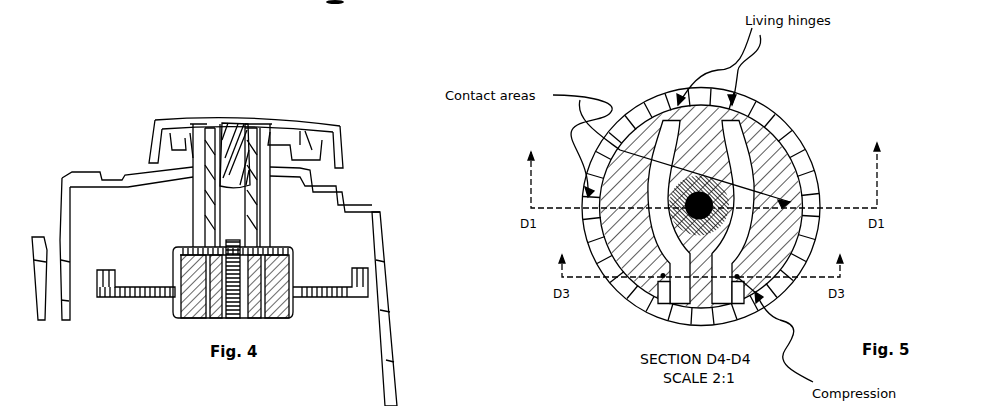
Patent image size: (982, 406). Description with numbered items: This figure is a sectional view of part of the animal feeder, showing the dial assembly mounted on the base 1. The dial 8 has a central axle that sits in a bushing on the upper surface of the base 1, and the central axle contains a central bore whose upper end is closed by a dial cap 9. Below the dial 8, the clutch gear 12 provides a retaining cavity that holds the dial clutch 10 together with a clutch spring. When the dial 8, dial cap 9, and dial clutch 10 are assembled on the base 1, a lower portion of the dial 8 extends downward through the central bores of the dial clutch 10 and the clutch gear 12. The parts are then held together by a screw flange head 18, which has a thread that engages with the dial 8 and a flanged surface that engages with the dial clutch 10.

The base 1 is at (380, 233).
The dial 8 is at (152, 128).
The dial cap 9 is at (230, 122).
The dial clutch 10 is at (192, 310).
The clutch gear 12 is at (125, 297).
The screw flange head 18 is at (233, 297).